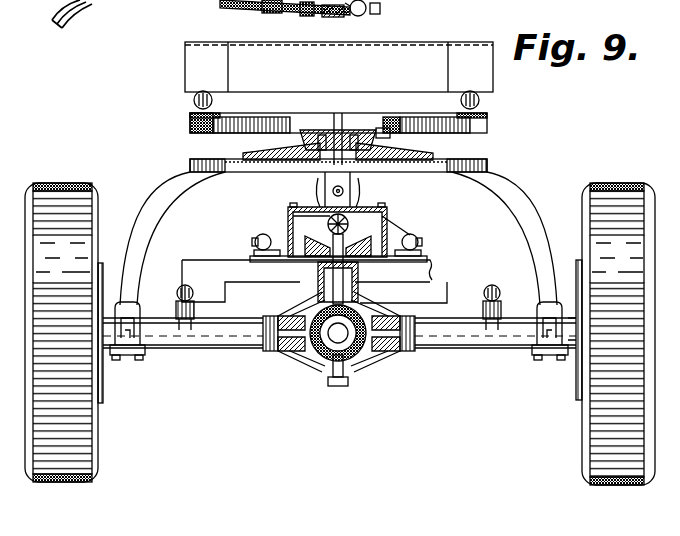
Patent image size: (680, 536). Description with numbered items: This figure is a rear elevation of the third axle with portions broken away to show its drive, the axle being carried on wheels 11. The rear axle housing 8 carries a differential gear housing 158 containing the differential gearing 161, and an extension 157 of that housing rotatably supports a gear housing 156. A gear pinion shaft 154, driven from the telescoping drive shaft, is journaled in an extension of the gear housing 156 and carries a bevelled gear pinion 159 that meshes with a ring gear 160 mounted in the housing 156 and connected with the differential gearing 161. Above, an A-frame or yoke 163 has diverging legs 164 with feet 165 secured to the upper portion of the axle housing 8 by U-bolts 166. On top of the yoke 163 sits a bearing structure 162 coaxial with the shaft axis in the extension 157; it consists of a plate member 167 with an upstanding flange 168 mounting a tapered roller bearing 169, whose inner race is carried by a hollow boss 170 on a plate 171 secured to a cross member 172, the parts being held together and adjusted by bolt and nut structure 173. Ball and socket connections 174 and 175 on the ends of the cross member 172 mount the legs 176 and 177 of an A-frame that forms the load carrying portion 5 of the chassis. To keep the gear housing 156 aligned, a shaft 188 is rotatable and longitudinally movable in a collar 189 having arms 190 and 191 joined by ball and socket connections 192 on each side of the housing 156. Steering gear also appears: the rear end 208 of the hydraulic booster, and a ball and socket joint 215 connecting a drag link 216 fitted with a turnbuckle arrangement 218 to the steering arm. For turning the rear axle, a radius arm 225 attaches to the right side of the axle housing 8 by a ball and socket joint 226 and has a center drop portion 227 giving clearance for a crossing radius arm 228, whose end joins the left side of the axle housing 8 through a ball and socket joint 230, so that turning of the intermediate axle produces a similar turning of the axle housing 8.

The load carrying portion 5 is at (494, 91).
The rear axle housing 8 is at (268, 350).
The wheel 11 is at (97, 478).
The gear pinion shaft 154 is at (342, 226).
The gear housing 156 is at (387, 216).
The extension of differential gear housing 157 is at (308, 288).
The differential gear housing 158 is at (338, 386).
The bevelled gear pinion 159 is at (289, 213).
The ring gear 160 is at (289, 232).
The differential gearing 161 is at (332, 356).
The bearing structure 162 is at (306, 130).
The A-frame or yoke 163 is at (190, 165).
The diverging legs 164 is at (158, 221).
The feet 165 is at (564, 312).
The U-bolts 166 is at (165, 302).
The plate member 167 is at (243, 154).
The upstanding flange 168 is at (400, 147).
The tapered roller bearing 169 is at (321, 133).
The hollow boss 170 is at (354, 133).
The plate 171 is at (396, 128).
The cross member 172 is at (488, 127).
The bolt and nut structure 173 is at (340, 130).
The ball and socket connection 174 is at (482, 101).
The ball and socket connection 175 is at (192, 101).
The leg of A-frame 176 is at (498, 33).
The leg of A-frame 177 is at (186, 46).
The shaft 188 is at (333, 189).
The collar 189 is at (346, 191).
The arm 190 is at (392, 222).
The arm 191 is at (316, 205).
The ball and socket connections 192 is at (420, 243).
The rear end of steering booster unit 208 is at (640, 7).
The ball and socket joint 215 is at (362, 16).
The drag link 216 is at (187, 4).
The turnbuckle arrangement 218 is at (320, 13).
The radius arm 225 is at (447, 290).
The ball and socket joint 226 is at (512, 276).
The center drop portion 227 is at (407, 292).
The radius arm 228 is at (222, 259).
The ball and socket joint 230 is at (185, 284).